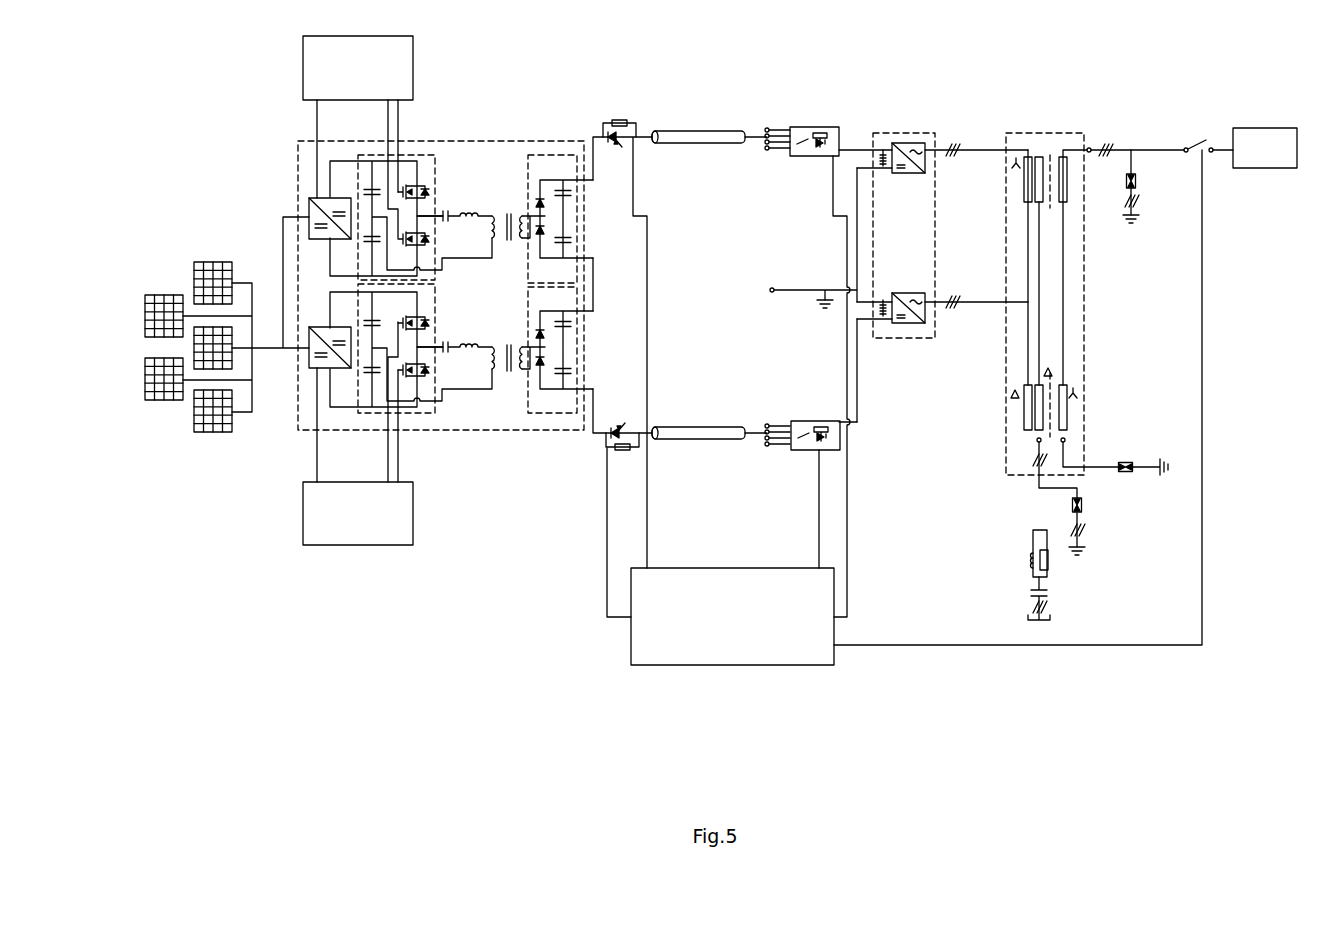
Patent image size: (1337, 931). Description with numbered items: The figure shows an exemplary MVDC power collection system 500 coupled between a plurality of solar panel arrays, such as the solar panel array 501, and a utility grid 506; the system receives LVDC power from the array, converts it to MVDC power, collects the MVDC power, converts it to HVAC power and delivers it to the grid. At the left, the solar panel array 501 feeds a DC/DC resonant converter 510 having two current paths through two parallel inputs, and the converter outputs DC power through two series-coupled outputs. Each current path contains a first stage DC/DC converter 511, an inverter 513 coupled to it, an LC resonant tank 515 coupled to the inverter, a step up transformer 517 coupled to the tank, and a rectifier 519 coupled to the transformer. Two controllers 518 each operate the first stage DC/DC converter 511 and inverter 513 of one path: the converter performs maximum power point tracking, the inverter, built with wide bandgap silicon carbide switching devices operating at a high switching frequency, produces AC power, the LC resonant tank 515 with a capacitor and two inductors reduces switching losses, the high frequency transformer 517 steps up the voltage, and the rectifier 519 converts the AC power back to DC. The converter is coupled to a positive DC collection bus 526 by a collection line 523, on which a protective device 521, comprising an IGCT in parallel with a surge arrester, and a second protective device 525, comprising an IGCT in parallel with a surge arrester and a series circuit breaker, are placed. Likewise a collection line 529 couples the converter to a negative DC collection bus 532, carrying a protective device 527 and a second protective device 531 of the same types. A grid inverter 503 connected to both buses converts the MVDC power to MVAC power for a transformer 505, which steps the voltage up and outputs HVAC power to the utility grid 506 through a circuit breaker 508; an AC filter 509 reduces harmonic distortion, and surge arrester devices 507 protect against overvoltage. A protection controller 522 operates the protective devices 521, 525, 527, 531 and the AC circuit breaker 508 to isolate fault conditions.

The MVDC power collection system 500 is at (512, 614).
The solar panel array 501 is at (204, 456).
The grid inverter 503 is at (910, 133).
The transformer 505 is at (1022, 133).
The utility grid 506 is at (1268, 128).
The surge arrester devices 507 is at (1137, 181).
The circuit breaker 508 is at (1200, 143).
The AC filter 509 is at (1047, 568).
The DC/DC resonant converter 510 is at (472, 141).
The first stage DC/DC converter 511 is at (309, 209).
The inverter 513 is at (428, 155).
The LC resonant tank 515 is at (464, 224).
The step up transformer 517 is at (512, 215).
The controller 518 is at (358, 290).
The rectifier 519 is at (540, 155).
The protective device 521 is at (610, 146).
The protection controller 522 is at (732, 616).
The collection line 523 is at (688, 131).
The second protective device 525 is at (822, 127).
The positive DC collection bus 526 is at (855, 150).
The protective device 527 is at (633, 452).
The collection line 529 is at (672, 427).
The second protective device 531 is at (813, 421).
The negative DC collection bus 532 is at (858, 378).